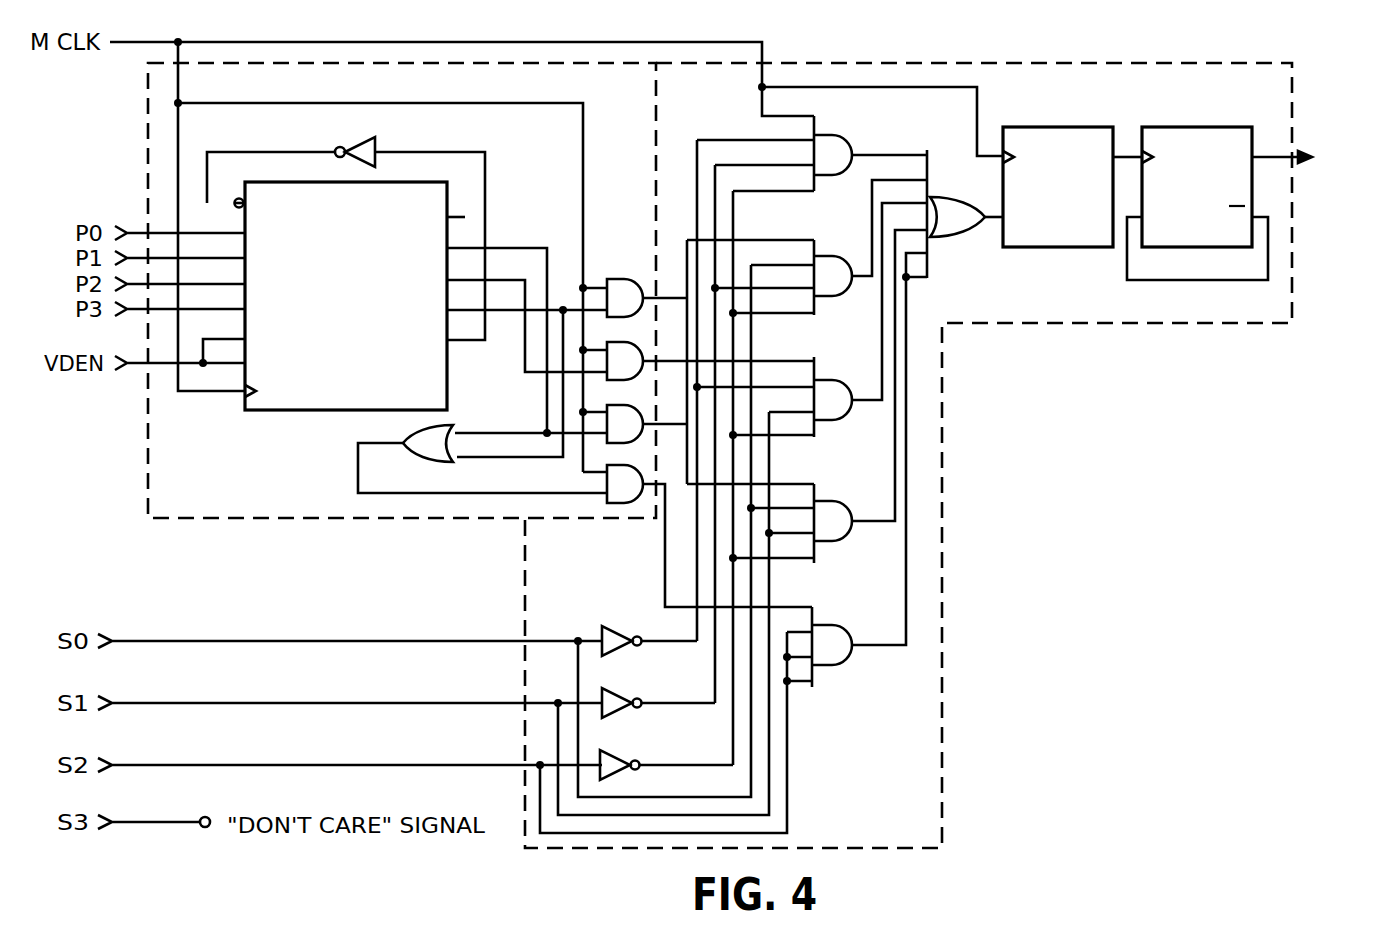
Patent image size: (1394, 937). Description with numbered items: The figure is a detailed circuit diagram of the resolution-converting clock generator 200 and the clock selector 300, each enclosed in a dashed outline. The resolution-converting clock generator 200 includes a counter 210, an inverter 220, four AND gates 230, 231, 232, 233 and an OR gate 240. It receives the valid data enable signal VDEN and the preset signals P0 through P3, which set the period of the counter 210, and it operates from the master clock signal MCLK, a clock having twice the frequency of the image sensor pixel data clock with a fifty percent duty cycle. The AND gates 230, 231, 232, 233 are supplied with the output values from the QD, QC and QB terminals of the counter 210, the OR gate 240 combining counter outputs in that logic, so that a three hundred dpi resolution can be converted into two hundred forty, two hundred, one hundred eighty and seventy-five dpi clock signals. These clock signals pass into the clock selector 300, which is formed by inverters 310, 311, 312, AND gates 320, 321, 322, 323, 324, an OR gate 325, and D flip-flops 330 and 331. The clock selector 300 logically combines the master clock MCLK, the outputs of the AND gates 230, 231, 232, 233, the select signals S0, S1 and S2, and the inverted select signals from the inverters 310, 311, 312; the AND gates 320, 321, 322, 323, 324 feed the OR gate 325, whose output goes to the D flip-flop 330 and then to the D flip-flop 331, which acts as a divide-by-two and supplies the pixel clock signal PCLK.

The resolution-converting clock generator 200 is at (331, 505).
The counter 210 is at (292, 412).
The inverter 220 is at (352, 138).
The AND gate 230 is at (624, 279).
The AND gate 231 is at (632, 342).
The AND gate 232 is at (630, 405).
The AND gate 233 is at (626, 505).
The OR gate 240 is at (447, 427).
The clock selector 300 is at (932, 725).
The inverter 310 is at (620, 627).
The inverter 311 is at (622, 690).
The inverter 312 is at (618, 752).
The AND gate 320 is at (855, 134).
The AND gate 321 is at (838, 256).
The AND gate 322 is at (840, 380).
The AND gate 323 is at (840, 501).
The AND gate 324 is at (838, 625).
The OR gate 325 is at (960, 238).
The D flip-flop 330 is at (1040, 127).
The D flip-flop 331 is at (1178, 127).